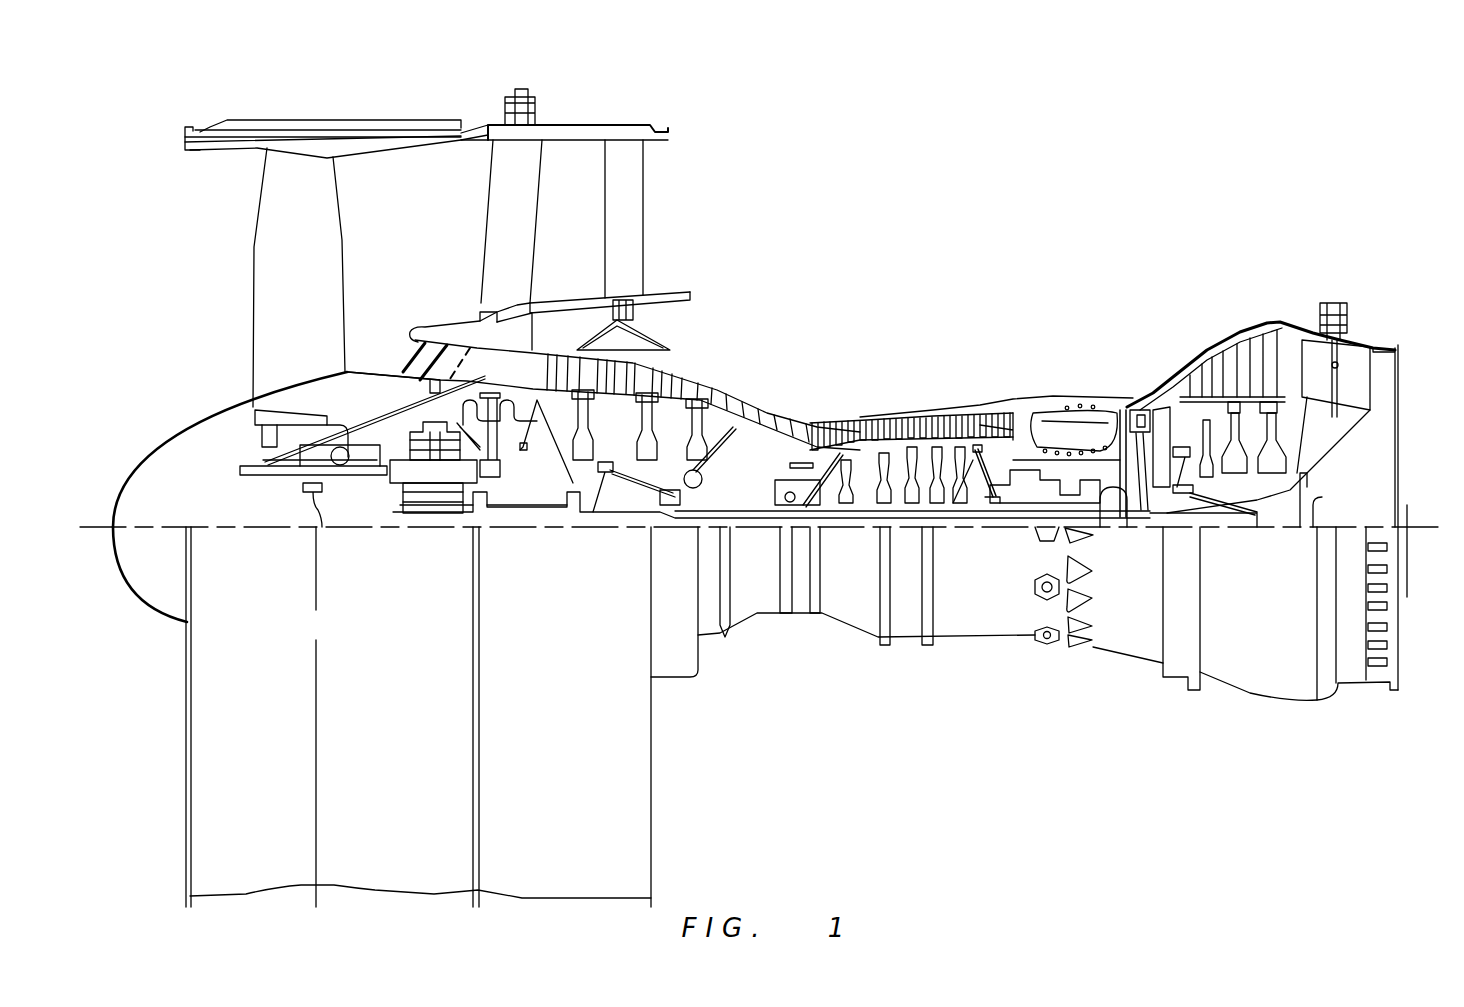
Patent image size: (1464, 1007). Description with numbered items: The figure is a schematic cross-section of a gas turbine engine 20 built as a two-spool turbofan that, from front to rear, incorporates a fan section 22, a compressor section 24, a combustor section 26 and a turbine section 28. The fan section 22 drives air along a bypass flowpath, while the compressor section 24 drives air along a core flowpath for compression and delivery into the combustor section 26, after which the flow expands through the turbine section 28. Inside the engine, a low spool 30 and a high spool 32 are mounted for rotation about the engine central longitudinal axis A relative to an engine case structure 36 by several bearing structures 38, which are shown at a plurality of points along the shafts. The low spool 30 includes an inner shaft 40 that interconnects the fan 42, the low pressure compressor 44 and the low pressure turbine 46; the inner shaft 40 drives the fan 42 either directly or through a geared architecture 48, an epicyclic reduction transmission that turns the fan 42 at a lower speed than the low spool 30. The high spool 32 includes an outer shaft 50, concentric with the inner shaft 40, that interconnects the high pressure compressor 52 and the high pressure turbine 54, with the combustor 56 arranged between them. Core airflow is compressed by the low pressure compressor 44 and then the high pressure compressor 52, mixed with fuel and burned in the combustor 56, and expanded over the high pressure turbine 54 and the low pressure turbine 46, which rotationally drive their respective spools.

The gas turbine engine 20 is at (1281, 207).
The fan section 22 is at (476, 98).
The compressor section 24 is at (1019, 270).
The combustor section 26 is at (1116, 270).
The turbine section 28 is at (1334, 270).
The low spool 30 is at (760, 473).
The high spool 32 is at (975, 447).
The engine case structure 36 is at (905, 643).
The bearing structures 38 is at (511, 605).
The inner shaft 40 is at (1100, 517).
The fan 42 is at (283, 300).
The low pressure compressor 44 is at (672, 369).
The low pressure turbine 46 is at (1245, 358).
The geared architecture 48 is at (437, 490).
The outer shaft 50 is at (1127, 513).
The high pressure compressor 52 is at (828, 440).
The high pressure turbine 54 is at (1137, 415).
The combustor 56 is at (1073, 428).
The engine central longitudinal axis A is at (1427, 527).